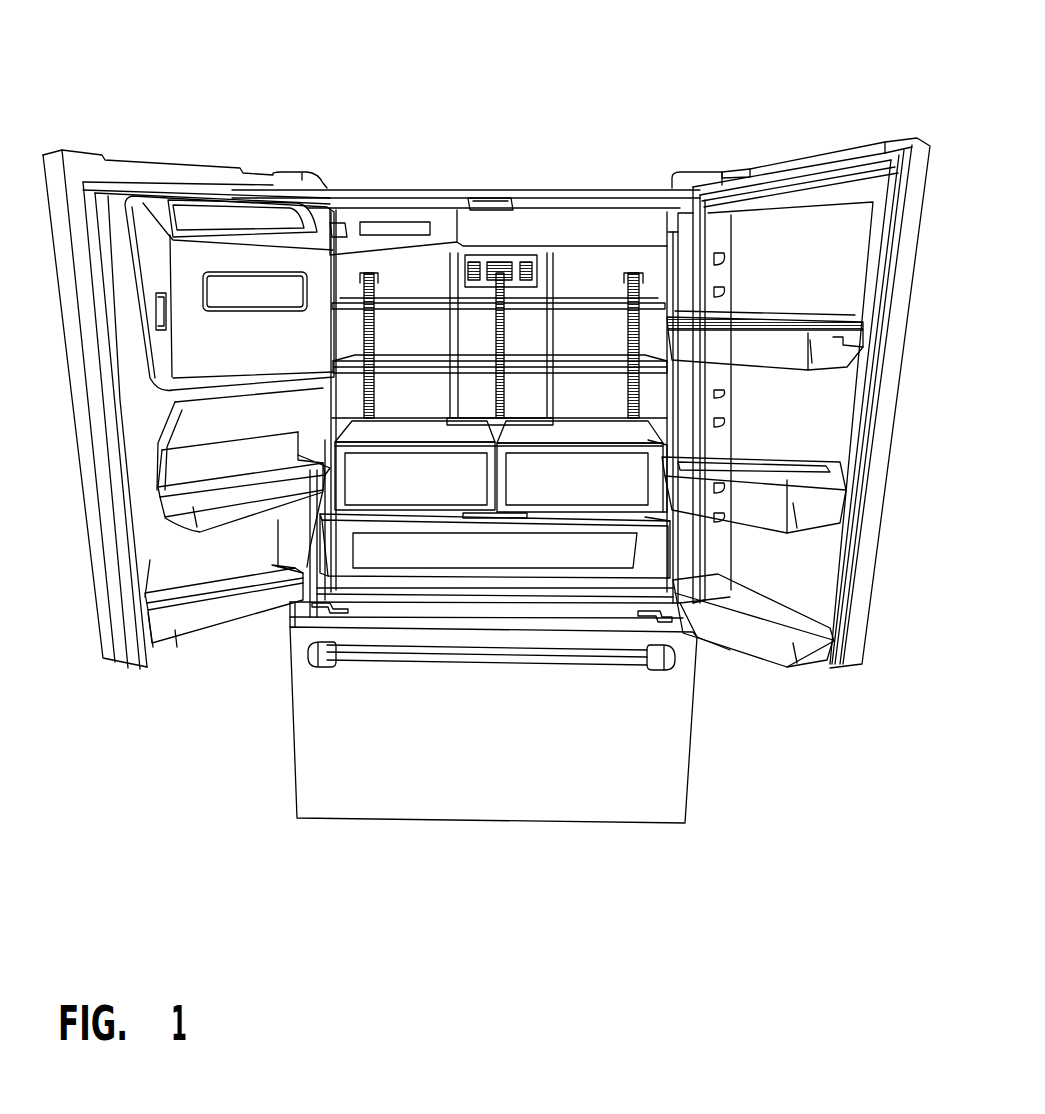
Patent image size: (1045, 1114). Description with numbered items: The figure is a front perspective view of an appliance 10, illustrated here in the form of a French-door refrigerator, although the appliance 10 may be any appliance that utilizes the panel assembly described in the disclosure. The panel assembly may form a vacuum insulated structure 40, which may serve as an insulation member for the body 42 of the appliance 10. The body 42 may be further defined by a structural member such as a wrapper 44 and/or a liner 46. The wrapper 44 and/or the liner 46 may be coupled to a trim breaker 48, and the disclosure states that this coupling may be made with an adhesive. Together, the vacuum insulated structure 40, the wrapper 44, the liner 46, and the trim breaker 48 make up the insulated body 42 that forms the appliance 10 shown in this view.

The appliance 10 is at (634, 114).
The vacuum insulated structure 40 is at (563, 197).
The body 42 is at (687, 262).
The wrapper 44 is at (358, 196).
The liner 46 is at (730, 268).
The trim breaker 48 is at (480, 594).